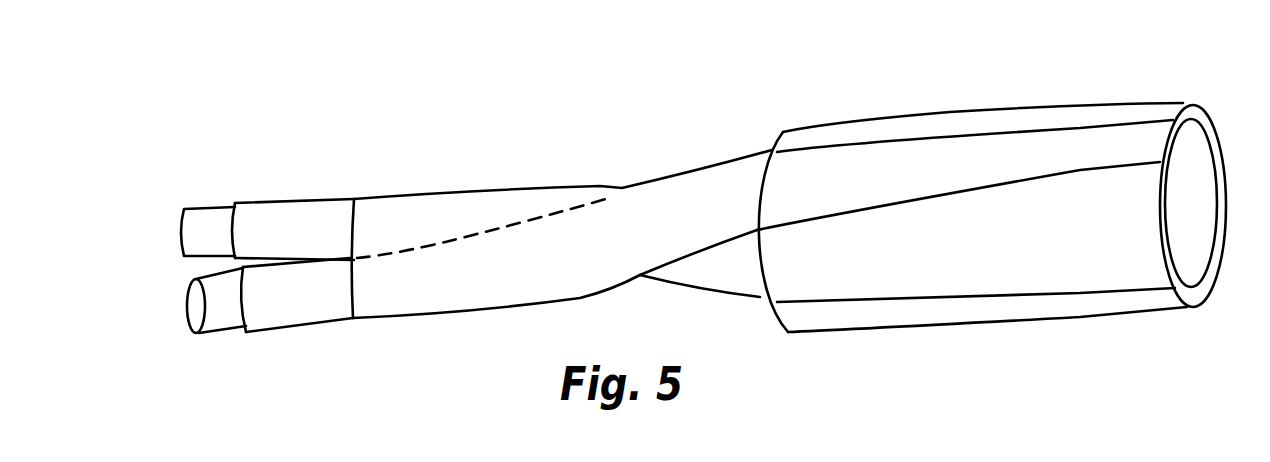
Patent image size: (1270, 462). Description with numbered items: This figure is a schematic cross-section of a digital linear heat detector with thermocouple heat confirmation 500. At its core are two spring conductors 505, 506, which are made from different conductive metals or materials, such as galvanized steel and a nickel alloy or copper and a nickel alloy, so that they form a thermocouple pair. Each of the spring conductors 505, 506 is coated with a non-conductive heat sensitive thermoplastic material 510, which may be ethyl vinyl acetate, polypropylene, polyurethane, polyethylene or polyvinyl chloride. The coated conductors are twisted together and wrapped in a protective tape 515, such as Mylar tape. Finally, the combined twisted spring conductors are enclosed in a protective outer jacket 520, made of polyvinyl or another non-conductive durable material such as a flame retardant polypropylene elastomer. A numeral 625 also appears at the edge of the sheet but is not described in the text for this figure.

The digital linear heat detector with thermocouple heat confirmation 500 is at (725, 233).
The spring conductor 505 is at (229, 200).
The spring conductor 506 is at (233, 330).
The non-conductive heat sensitive thermoplastic material 510 is at (322, 192).
The protective tape 515 is at (467, 193).
The protective outer jacket 520 is at (862, 117).
The reference numeral (adjacent figure) 625 is at (1025, 452).